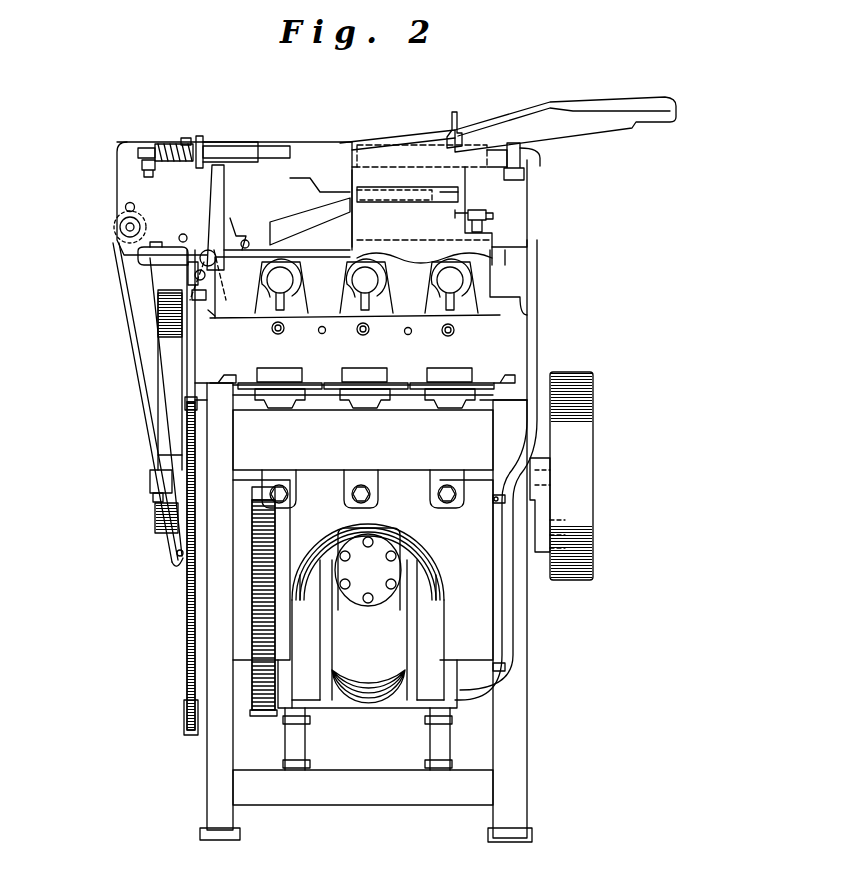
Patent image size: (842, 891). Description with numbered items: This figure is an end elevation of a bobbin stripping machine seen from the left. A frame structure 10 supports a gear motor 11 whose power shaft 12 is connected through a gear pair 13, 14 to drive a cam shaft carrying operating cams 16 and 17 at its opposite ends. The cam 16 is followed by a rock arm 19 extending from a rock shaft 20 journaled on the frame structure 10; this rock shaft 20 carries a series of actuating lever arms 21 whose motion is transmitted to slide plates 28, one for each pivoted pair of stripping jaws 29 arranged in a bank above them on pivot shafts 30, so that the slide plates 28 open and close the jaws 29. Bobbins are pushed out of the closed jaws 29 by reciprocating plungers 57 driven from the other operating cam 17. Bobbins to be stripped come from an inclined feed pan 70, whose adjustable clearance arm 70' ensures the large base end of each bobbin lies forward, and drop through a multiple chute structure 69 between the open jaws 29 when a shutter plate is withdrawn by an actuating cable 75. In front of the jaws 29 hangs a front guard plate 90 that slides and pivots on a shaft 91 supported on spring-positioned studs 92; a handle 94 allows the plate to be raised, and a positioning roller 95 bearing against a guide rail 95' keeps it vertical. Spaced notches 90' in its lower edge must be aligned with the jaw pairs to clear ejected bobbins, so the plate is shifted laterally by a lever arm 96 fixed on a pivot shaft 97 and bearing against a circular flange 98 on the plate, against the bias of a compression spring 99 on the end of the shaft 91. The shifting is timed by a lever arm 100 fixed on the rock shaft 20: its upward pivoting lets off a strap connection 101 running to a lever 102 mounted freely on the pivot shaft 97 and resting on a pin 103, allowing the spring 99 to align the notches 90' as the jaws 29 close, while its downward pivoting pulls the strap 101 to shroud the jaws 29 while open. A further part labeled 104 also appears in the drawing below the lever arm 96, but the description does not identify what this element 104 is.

The frame structure 10 is at (536, 636).
The gear motor 11 is at (432, 580).
The power shaft 12 is at (288, 572).
The gear pair 13 is at (262, 720).
The gear pair 14 is at (276, 512).
The operating cam 16 is at (578, 412).
The operating cam 17 is at (170, 327).
The rock arm 19 is at (548, 515).
The rock shaft 20 is at (490, 510).
The actuating lever arms 21 is at (432, 492).
The slide plates 28 is at (282, 374).
The stripping jaws 29 is at (296, 314).
The pivot shafts 30 is at (274, 334).
The reciprocating plungers 57 is at (282, 282).
The multiple chute structure 69 is at (318, 222).
The inclined feed pan 70 is at (565, 116).
The adjustable clearance arm 70' is at (466, 116).
The actuating cable 75 is at (128, 298).
The front guard plate 90 is at (465, 205).
The notches 90' is at (424, 249).
The shaft 91 is at (272, 148).
The studs 92 is at (143, 168).
The handle 94 is at (400, 198).
The positioning roller 95 is at (473, 207).
The guide rail 95' is at (508, 205).
The lever arm 96 is at (223, 212).
The pivot shaft 97 is at (206, 250).
The circular flange 98 is at (200, 138).
The compression spring 99 is at (172, 145).
The lever arm 100 is at (150, 486).
The strap connection 101 is at (152, 362).
The lever 102 is at (148, 262).
The pin 103 is at (194, 276).
The plate 104 is at (218, 318).